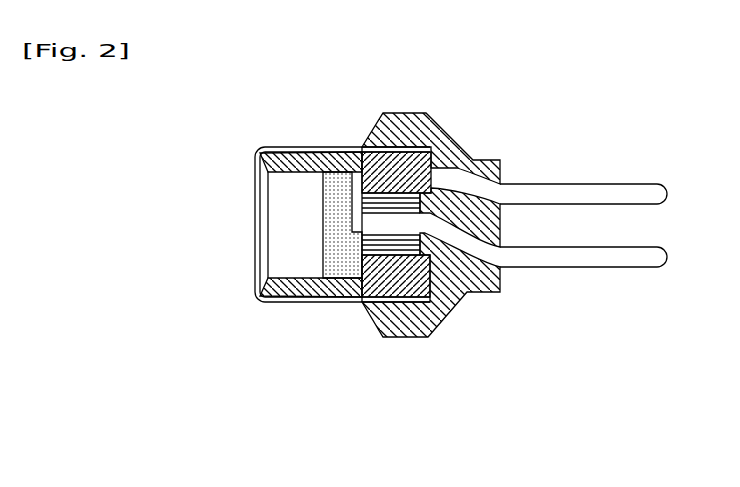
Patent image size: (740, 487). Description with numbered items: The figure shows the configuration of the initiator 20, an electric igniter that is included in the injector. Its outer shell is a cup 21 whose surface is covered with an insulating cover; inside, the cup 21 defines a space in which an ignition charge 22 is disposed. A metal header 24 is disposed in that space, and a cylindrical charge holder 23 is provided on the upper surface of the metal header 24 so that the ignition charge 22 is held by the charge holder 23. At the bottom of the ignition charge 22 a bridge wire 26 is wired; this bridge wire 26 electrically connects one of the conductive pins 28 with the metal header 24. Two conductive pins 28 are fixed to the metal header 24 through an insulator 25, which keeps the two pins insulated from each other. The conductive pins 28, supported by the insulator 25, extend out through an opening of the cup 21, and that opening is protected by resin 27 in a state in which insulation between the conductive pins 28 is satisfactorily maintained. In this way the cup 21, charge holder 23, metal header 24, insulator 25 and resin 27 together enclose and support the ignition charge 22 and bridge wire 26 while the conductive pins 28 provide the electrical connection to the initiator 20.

The initiator 20 is at (245, 372).
The cup 21 is at (256, 150).
The ignition charge 22 is at (322, 212).
The charge holder 23 is at (295, 280).
The metal header 24 is at (382, 288).
The insulator 25 is at (400, 200).
The bridge wire 26 is at (354, 148).
The resin 27 is at (473, 160).
The conductive pins 28 is at (565, 184).